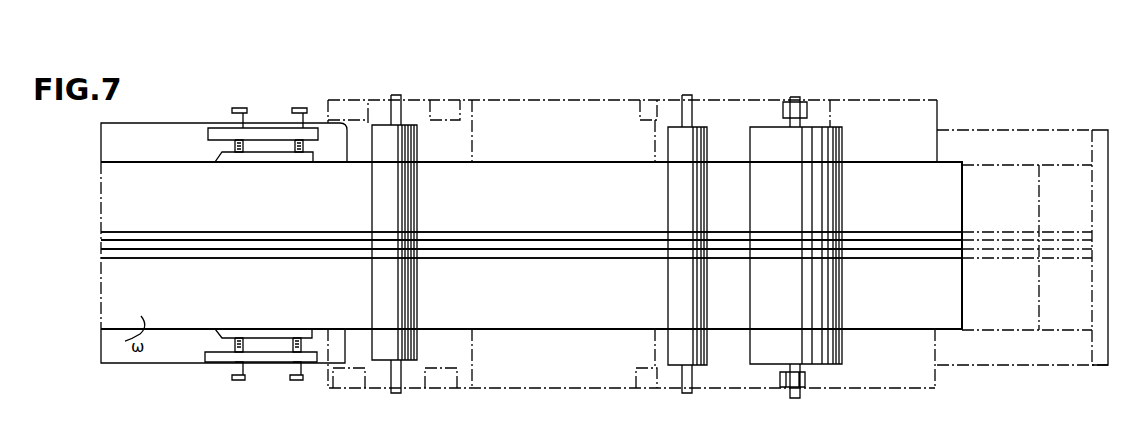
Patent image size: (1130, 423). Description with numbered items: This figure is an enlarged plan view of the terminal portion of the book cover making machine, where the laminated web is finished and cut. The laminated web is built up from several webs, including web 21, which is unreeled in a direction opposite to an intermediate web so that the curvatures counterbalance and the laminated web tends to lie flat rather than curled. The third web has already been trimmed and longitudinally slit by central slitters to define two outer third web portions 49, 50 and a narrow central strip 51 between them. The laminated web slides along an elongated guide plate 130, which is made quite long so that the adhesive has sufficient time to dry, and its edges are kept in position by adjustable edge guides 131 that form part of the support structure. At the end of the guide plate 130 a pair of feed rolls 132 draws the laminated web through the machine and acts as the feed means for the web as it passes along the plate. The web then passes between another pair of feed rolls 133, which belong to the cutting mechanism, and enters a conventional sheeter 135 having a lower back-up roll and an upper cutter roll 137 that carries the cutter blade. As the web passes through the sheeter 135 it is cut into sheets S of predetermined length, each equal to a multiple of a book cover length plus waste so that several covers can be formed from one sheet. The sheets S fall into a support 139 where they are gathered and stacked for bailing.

The web 21 is at (101, 253).
The outer third web portion 49 is at (107, 288).
The outer third web portion 50 is at (120, 197).
The narrow central strip 51 is at (101, 242).
The guide plate 130 is at (175, 357).
The adjustable edge guides 131 is at (265, 125).
The feed rolls 132 is at (404, 340).
The feed rolls 133 is at (677, 340).
The sheeter 135 is at (843, 333).
The upper cutter roll 137 is at (753, 343).
The support 139 is at (948, 369).
The sheets S is at (983, 315).